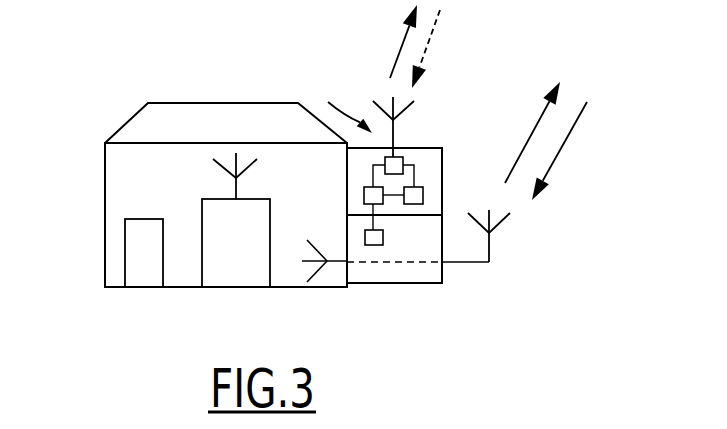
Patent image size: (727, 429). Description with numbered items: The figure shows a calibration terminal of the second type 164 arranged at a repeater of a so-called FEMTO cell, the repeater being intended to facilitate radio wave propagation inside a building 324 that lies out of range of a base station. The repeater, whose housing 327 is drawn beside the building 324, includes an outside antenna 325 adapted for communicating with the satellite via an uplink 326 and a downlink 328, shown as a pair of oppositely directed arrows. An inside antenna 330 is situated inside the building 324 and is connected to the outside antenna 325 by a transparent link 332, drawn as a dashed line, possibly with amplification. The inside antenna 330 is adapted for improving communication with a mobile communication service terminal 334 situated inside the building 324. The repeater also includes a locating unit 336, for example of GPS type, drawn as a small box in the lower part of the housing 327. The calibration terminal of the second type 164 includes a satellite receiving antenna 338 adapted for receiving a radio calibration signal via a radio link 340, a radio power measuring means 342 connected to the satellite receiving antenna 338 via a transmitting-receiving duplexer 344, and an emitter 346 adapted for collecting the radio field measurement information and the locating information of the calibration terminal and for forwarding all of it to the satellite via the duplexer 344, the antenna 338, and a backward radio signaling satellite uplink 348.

The building 324 is at (105, 208).
The mobile communication service terminal 334 is at (239, 256).
The inside antenna 330 is at (318, 272).
The transparent link 332 is at (370, 263).
The outdoor unit housing 327 is at (443, 272).
The transmitting-receiving duplexer 344 is at (404, 164).
The emitter 346 is at (365, 197).
The radio power measuring means 342 is at (424, 196).
The locating unit 336 is at (380, 239).
The satellite receiving antenna 338 is at (395, 138).
The calibration terminal of the second type 164 is at (338, 103).
The backward radio signaling satellite uplink 348 is at (399, 48).
The radio link 340 is at (426, 48).
The uplink 326 is at (533, 132).
The downlink 328 is at (559, 155).
The outside antenna 325 is at (491, 247).